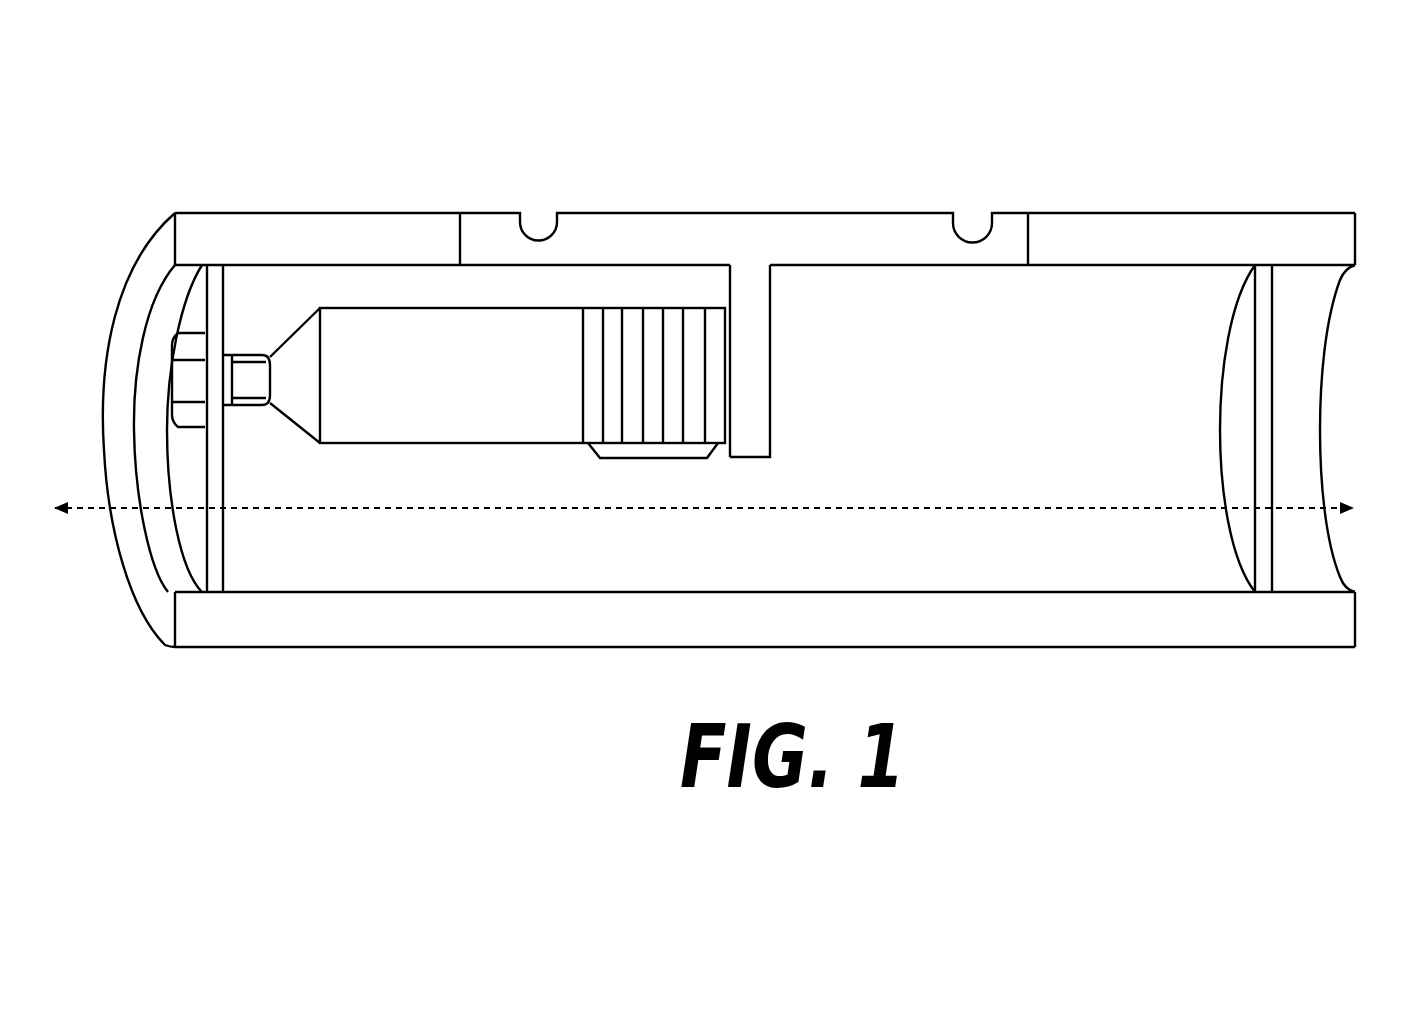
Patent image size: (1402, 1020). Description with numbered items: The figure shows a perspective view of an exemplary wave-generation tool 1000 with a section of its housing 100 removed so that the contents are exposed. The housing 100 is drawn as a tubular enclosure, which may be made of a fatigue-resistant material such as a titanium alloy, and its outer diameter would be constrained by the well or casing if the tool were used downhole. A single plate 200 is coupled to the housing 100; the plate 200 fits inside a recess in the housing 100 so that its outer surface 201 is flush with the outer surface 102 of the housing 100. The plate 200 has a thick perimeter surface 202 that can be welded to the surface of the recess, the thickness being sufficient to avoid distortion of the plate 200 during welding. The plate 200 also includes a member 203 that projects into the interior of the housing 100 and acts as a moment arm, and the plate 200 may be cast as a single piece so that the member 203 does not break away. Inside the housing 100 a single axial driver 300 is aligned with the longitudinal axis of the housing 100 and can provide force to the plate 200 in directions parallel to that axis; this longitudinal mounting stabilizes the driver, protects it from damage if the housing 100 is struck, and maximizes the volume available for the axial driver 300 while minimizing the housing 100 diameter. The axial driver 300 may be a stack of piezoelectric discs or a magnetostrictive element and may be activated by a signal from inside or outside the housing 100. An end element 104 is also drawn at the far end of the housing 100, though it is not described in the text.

The wave-generation tool 1000 is at (440, 152).
The housing 100 is at (313, 238).
The outer surface of housing 102 is at (1173, 210).
The end disk / retainer 104 is at (1230, 558).
The plate 200 is at (757, 259).
The outer surface of plate 201 is at (701, 212).
The perimeter surface 202 is at (455, 246).
The member 203 is at (745, 297).
The axial driver 300 is at (657, 460).